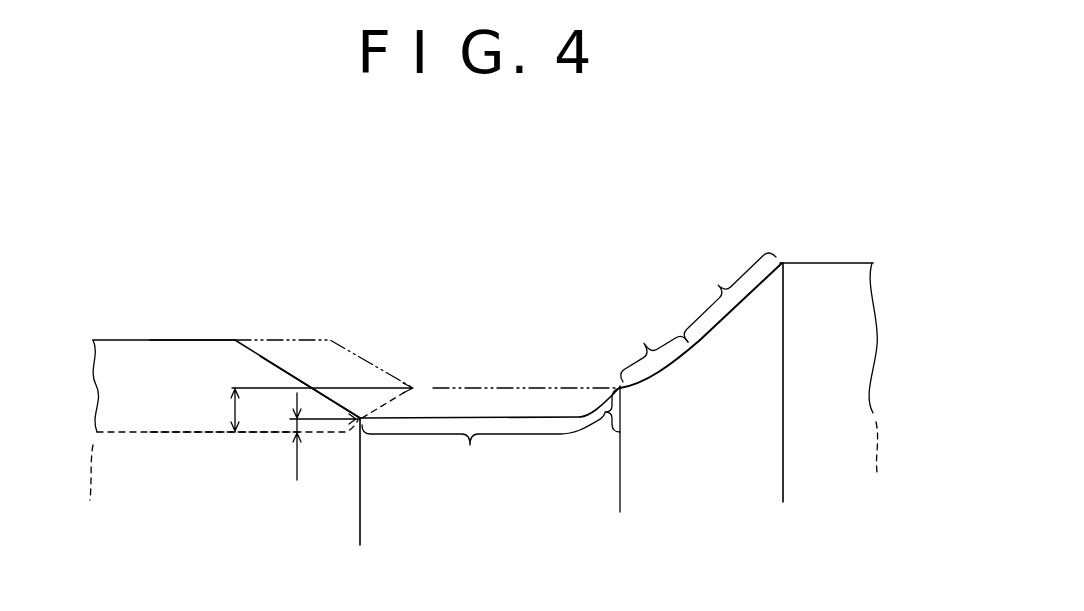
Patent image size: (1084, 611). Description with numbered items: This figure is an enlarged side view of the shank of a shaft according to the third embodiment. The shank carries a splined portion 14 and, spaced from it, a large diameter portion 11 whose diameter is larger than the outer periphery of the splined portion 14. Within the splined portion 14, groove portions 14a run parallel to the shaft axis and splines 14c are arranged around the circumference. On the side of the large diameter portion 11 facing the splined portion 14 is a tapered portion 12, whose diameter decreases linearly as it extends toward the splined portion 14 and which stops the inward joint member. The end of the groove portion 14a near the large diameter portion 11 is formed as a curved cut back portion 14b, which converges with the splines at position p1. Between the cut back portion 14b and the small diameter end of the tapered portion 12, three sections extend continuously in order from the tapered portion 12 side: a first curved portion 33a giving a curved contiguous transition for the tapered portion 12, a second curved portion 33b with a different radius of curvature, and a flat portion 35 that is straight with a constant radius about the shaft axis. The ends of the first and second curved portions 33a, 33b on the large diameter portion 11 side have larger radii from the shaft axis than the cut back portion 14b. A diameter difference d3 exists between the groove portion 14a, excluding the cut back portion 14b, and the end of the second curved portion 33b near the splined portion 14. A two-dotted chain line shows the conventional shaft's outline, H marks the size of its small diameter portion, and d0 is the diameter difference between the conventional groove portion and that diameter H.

The large diameter portion 11 is at (842, 263).
The tapered portion 12 is at (728, 292).
The splined portion 14 is at (126, 340).
The groove portion 14a is at (128, 432).
The cut back portion 14b is at (350, 402).
The splines 14c is at (188, 340).
The first curved portion 33a is at (655, 352).
The second curved portion 33b is at (620, 432).
The flat portion 35 is at (482, 445).
The position P1 p1 is at (360, 418).
The size of the small diameter portion of the conventional shaft H is at (478, 388).
The diameter difference d0 is at (218, 410).
The diameter difference d3 is at (281, 436).